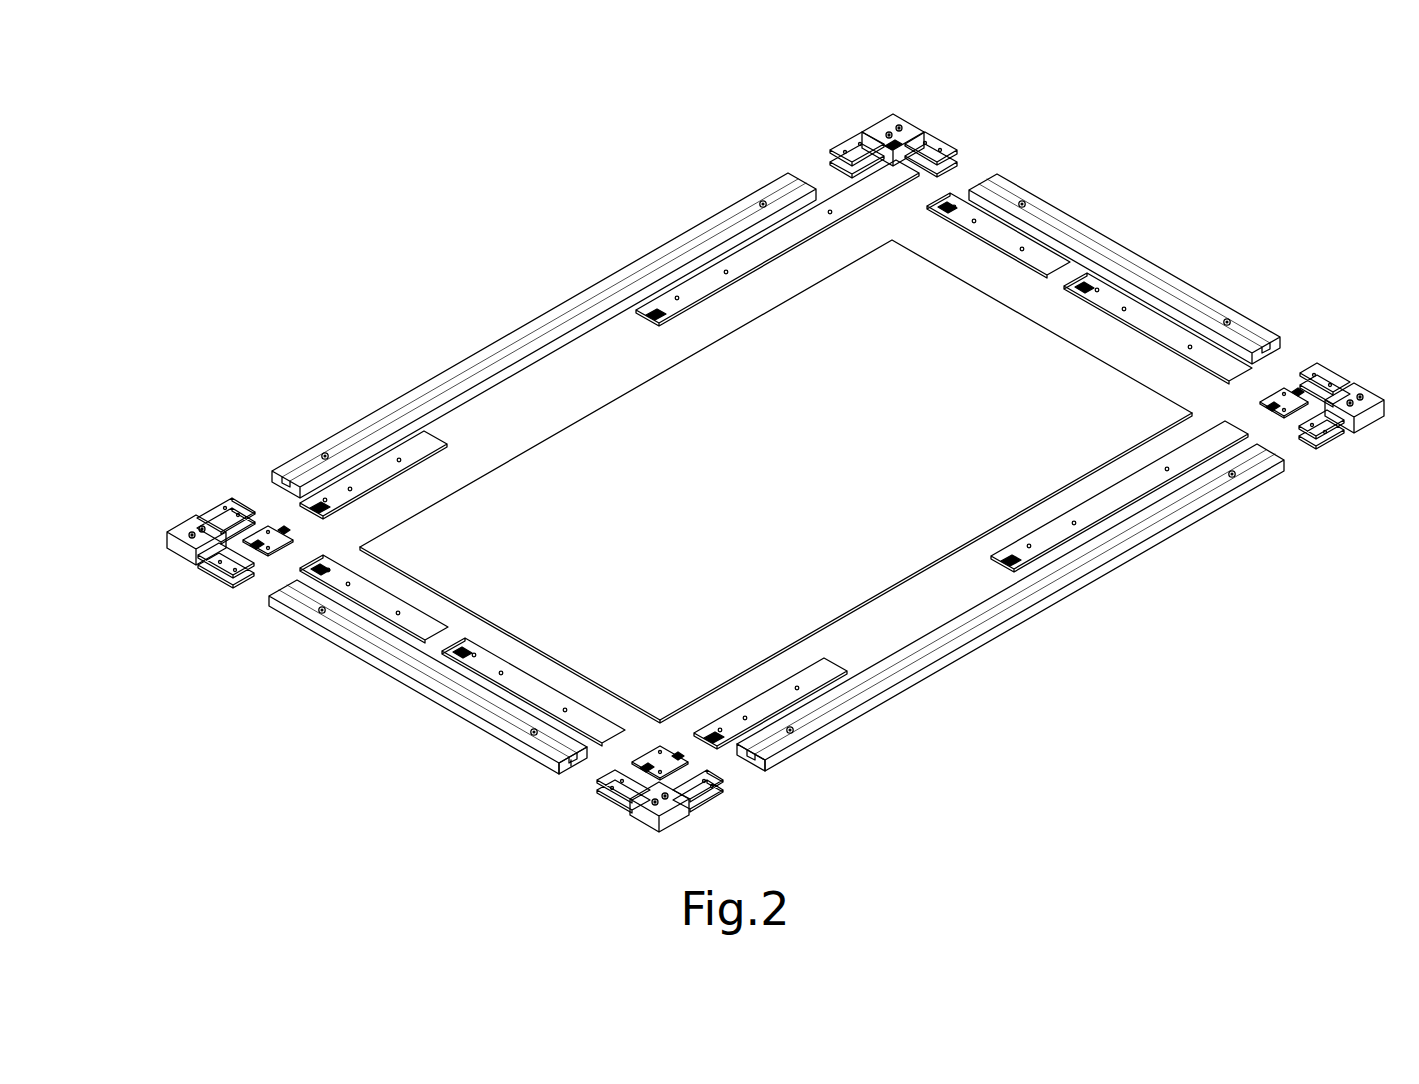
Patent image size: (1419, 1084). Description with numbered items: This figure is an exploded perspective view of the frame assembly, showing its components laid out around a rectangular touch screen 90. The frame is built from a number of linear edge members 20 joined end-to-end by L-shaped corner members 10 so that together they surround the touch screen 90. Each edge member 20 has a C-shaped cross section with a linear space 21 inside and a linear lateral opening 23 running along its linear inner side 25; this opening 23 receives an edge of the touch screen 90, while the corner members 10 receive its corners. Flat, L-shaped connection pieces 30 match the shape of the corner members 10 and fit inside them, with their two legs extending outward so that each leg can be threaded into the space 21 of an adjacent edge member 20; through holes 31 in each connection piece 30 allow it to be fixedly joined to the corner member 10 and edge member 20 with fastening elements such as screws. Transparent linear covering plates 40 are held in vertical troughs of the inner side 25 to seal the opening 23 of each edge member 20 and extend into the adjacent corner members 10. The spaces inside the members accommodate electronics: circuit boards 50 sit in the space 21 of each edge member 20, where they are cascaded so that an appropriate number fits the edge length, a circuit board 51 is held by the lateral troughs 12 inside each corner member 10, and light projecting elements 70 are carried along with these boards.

The corner member 10 is at (770, 481).
The lateral trough 12 is at (1352, 430).
The edge member 20 is at (1010, 628).
The space 21 is at (751, 772).
The lateral opening 23 is at (574, 765).
The inner side 25 is at (429, 706).
The connection piece 30 is at (724, 788).
The through hole 31 is at (612, 797).
The covering plate 40 is at (589, 776).
The circuit board 50 is at (952, 606).
The circuit board 51 is at (681, 758).
The light projecting element 70 is at (880, 198).
The touch screen 90 is at (1085, 361).